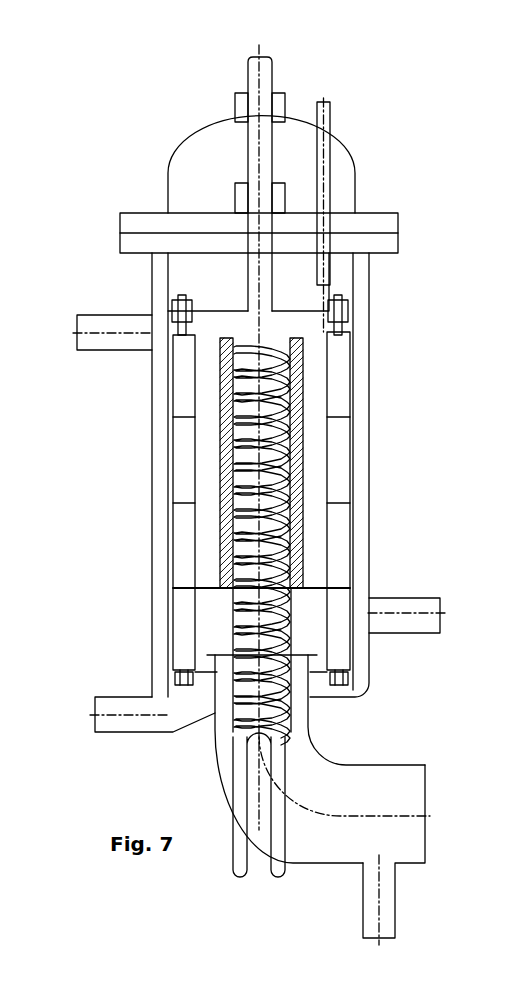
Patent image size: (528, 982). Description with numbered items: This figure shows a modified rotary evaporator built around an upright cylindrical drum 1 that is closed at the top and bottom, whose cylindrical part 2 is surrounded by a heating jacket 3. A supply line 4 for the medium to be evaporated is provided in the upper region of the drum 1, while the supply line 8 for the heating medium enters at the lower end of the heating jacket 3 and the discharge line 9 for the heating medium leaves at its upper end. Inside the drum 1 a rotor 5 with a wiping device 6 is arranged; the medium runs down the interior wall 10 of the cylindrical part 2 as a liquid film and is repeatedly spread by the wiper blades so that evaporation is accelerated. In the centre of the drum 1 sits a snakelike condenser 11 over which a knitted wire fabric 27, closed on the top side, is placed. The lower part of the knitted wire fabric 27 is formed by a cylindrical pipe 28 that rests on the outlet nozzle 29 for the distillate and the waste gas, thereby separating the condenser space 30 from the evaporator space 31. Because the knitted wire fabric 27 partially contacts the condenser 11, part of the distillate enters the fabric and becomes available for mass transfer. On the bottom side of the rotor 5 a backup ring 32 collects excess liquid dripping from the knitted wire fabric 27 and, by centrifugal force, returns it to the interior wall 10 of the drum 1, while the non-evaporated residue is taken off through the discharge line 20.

The drum 1 is at (362, 184).
The cylindrical part 2 is at (355, 205).
The heating jacket 3 is at (362, 485).
The supply line 4 is at (325, 112).
The rotor 5 is at (345, 300).
The wiping device 6 is at (352, 360).
The supply line for heating medium 8 is at (87, 325).
The discharge line for heating medium 9 is at (440, 605).
The interior wall 10 is at (167, 293).
The condenser 11 is at (278, 578).
The discharge line 20 is at (110, 723).
The knitted wire fabric 27 is at (305, 358).
The cylindrical pipe 28 is at (293, 637).
The outlet nozzle 29 is at (330, 760).
The condenser space 30 is at (248, 295).
The evaporator space 31 is at (320, 415).
The backup ring 32 is at (193, 590).